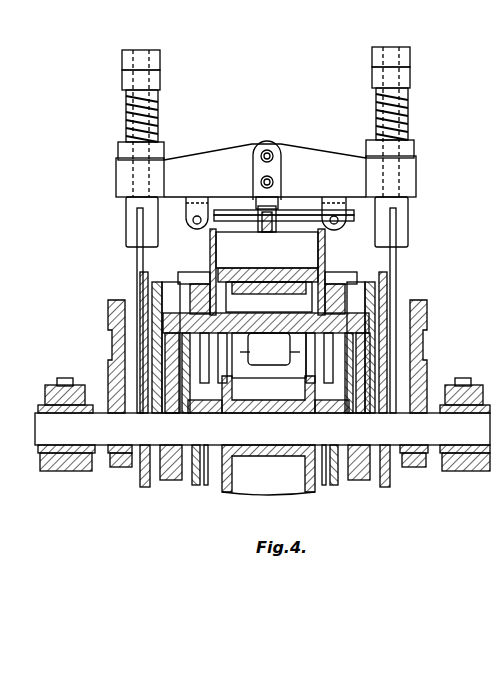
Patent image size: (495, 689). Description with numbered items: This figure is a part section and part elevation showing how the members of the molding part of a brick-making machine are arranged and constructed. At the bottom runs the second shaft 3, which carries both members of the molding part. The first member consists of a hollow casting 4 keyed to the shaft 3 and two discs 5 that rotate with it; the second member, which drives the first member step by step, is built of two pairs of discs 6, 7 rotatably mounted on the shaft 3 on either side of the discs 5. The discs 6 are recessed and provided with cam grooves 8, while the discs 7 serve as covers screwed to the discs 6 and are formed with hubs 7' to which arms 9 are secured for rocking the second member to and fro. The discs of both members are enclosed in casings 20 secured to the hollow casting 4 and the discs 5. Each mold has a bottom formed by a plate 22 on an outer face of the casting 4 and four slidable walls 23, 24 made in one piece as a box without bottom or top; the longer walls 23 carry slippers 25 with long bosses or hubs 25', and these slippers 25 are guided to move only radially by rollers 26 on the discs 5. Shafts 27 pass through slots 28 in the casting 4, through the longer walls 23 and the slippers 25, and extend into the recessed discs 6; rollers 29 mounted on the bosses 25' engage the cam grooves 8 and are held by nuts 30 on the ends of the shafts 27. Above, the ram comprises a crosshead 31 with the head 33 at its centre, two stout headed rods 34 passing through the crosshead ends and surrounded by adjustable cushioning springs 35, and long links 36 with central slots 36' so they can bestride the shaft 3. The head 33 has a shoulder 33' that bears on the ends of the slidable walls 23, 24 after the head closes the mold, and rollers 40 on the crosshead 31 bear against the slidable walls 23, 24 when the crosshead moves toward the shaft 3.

The second shaft 3 is at (262, 429).
The hollow casting 4 is at (262, 493).
The discs 5 is at (198, 486).
The discs 6 is at (172, 482).
The discs 7 is at (265, 481).
The hubs 7' is at (264, 435).
The cam grooves 8 is at (172, 335).
The arms 9 is at (108, 351).
The casings 20 is at (140, 270).
The plates 22 is at (267, 250).
The slidable walls 23 is at (210, 244).
The slidable walls 24 is at (256, 274).
The slippers 25 is at (266, 359).
The long bosses or hubs 25' is at (267, 297).
The rollers 26 is at (203, 400).
The shafts 27 is at (272, 322).
The slots 28 is at (269, 355).
The rollers 29 is at (183, 290).
The nuts 30 is at (152, 300).
The crosshead 31 is at (233, 150).
The head 33 is at (282, 175).
The shoulder 33' is at (266, 202).
The headed rods 34 is at (133, 178).
The cushioning springs 35 is at (125, 105).
The long links 36 is at (257, 305).
The slots 36' is at (271, 373).
The rollers 40 is at (250, 212).